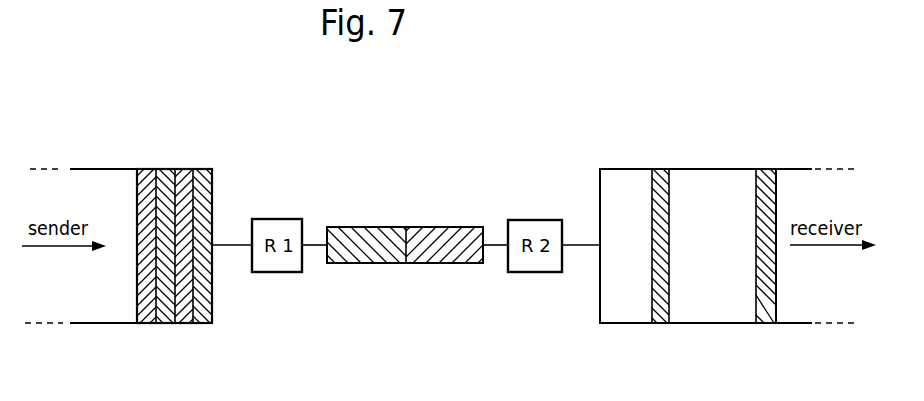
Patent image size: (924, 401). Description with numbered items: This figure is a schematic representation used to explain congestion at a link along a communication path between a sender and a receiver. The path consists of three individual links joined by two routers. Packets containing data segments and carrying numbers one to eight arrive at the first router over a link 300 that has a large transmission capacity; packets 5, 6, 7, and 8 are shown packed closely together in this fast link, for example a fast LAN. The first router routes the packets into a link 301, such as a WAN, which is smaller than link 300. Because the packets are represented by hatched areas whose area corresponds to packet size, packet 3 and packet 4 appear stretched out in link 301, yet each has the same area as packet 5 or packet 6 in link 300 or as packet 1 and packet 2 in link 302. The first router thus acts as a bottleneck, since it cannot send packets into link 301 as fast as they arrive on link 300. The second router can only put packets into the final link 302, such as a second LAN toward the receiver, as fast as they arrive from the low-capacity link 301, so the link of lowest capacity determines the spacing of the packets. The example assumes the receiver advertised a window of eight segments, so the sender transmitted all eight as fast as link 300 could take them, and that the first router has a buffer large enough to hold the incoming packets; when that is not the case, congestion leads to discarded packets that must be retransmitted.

The packet 1 is at (766, 232).
The packet 2 is at (660, 232).
The packet 3 is at (444, 231).
The packet 4 is at (366, 231).
The packet 5 is at (202, 231).
The packet 6 is at (184, 231).
The packet 7 is at (165, 231).
The packet 8 is at (82, 150).
The link 300 is at (105, 313).
The link 301 is at (415, 265).
The link 302 is at (708, 315).